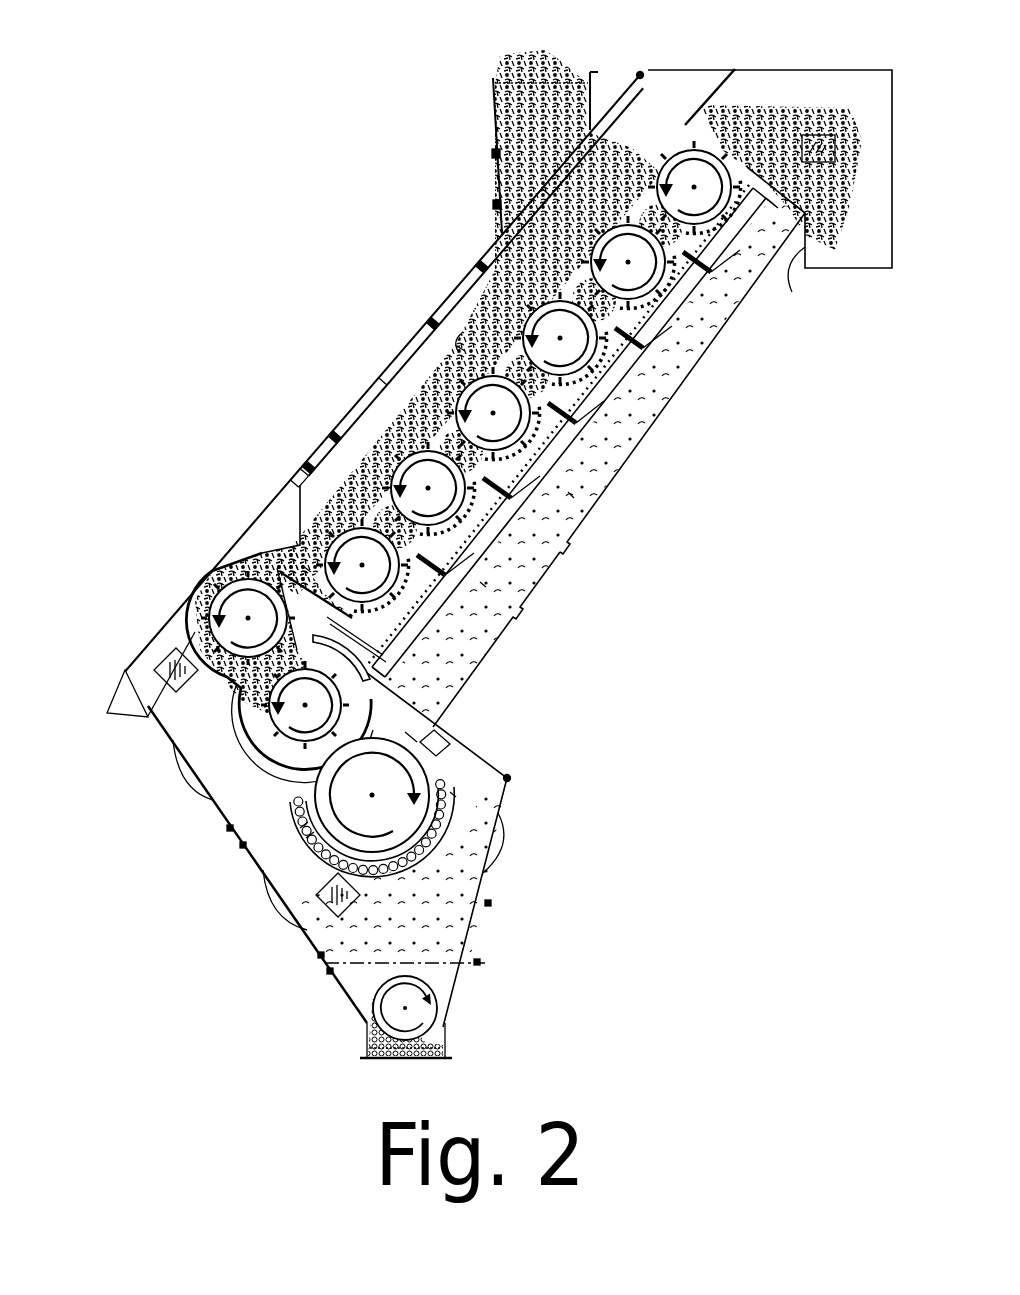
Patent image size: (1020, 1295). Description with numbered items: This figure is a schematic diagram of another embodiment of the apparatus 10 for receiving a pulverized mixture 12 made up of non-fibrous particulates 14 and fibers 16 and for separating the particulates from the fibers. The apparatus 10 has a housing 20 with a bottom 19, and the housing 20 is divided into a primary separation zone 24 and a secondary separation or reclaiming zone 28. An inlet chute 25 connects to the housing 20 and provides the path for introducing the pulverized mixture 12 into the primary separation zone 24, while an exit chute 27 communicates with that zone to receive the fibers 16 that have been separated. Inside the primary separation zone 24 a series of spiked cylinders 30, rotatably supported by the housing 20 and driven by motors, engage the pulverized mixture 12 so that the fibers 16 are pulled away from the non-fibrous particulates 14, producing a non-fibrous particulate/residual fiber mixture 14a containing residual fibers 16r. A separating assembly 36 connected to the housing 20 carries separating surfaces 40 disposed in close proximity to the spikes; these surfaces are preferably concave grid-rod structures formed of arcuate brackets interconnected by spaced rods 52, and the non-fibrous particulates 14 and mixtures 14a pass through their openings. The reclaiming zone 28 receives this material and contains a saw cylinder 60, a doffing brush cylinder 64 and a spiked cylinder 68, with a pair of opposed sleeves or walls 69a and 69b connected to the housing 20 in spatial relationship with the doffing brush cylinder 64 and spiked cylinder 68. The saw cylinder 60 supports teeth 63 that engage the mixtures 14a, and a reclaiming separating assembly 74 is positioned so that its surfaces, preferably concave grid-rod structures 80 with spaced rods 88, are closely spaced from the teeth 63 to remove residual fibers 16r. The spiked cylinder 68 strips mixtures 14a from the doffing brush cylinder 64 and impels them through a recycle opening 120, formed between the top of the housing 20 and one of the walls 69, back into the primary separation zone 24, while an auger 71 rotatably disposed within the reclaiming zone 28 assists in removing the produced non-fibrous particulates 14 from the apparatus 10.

The apparatus 10 is at (322, 316).
The pulverized mixture 12 is at (530, 181).
The non-fibrous particulates 14 is at (524, 548).
The non-fibrous particulate/residual fiber mixture 14a is at (308, 570).
The fibers 16 is at (855, 178).
The residual fibers 16r is at (213, 598).
The bottom 19 is at (641, 432).
The housing 20 is at (293, 478).
The primary separation zone 24 is at (462, 333).
The inlet chute 25 is at (492, 115).
The exit chute 27 is at (735, 103).
The secondary separation or reclaiming zone 28 is at (237, 788).
The spiked cylinders 30 is at (415, 470).
The separating assembly 36 is at (692, 255).
The separating surfaces 40 is at (700, 332).
The spaced rods 52 is at (671, 390).
The saw cylinder 60 is at (348, 798).
The teeth 63 is at (327, 870).
The doffing brush cylinder 64 is at (298, 710).
The spiked cylinder 68 is at (240, 630).
The walls 69 is at (252, 742).
The sleeve or wall 69a is at (192, 633).
The sleeve or wall 69b is at (360, 680).
The auger 71 is at (428, 1007).
The reclaiming separating assembly 74 is at (300, 828).
The concave grid-rod structures 80 is at (453, 815).
The spaced rods 88 is at (318, 857).
The recycle opening 120 is at (253, 554).